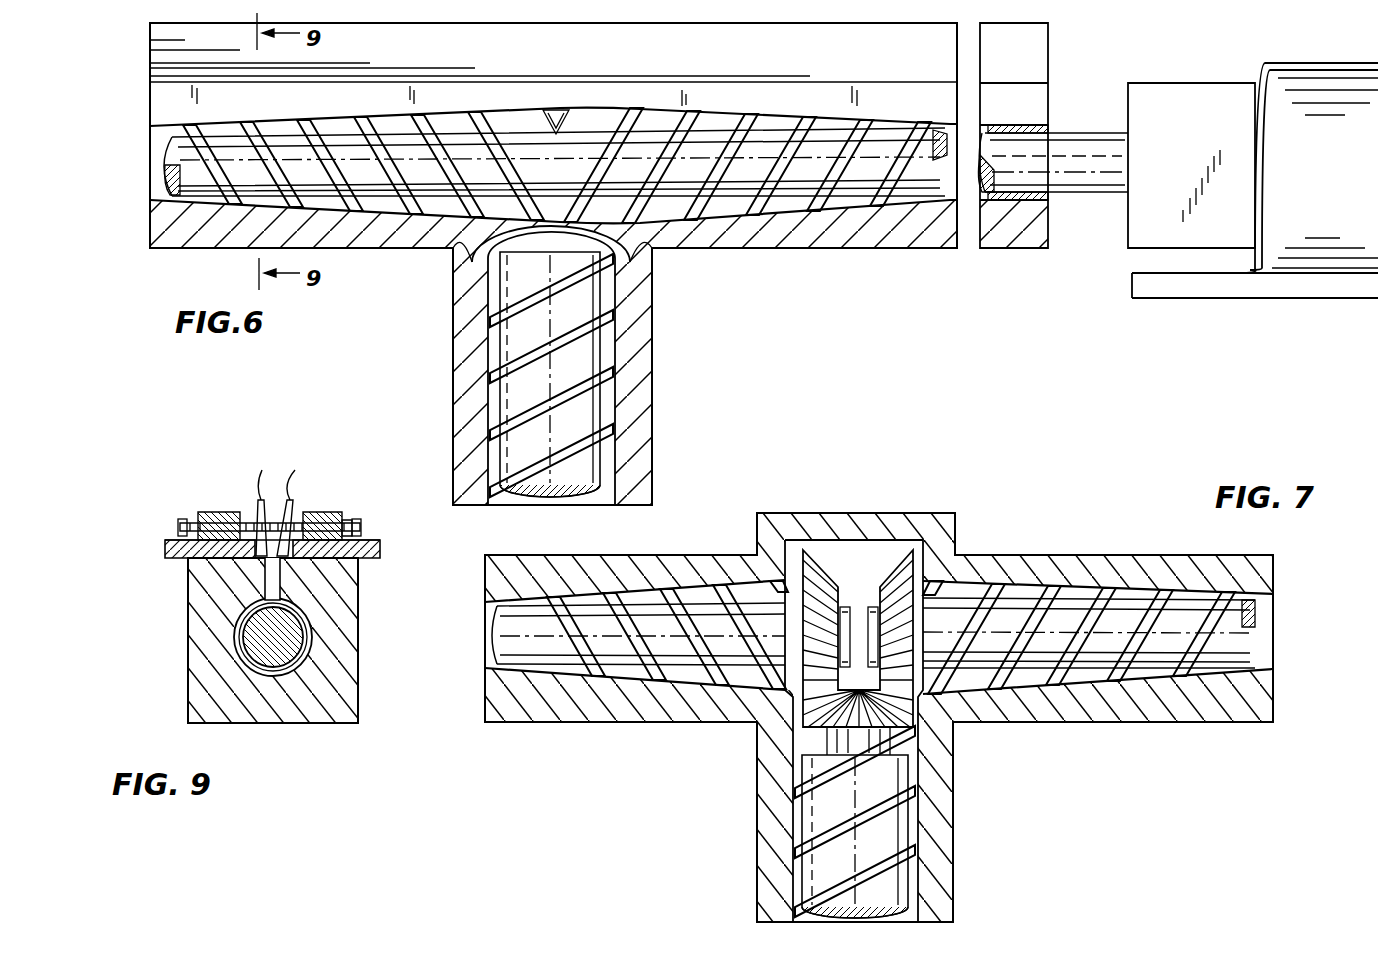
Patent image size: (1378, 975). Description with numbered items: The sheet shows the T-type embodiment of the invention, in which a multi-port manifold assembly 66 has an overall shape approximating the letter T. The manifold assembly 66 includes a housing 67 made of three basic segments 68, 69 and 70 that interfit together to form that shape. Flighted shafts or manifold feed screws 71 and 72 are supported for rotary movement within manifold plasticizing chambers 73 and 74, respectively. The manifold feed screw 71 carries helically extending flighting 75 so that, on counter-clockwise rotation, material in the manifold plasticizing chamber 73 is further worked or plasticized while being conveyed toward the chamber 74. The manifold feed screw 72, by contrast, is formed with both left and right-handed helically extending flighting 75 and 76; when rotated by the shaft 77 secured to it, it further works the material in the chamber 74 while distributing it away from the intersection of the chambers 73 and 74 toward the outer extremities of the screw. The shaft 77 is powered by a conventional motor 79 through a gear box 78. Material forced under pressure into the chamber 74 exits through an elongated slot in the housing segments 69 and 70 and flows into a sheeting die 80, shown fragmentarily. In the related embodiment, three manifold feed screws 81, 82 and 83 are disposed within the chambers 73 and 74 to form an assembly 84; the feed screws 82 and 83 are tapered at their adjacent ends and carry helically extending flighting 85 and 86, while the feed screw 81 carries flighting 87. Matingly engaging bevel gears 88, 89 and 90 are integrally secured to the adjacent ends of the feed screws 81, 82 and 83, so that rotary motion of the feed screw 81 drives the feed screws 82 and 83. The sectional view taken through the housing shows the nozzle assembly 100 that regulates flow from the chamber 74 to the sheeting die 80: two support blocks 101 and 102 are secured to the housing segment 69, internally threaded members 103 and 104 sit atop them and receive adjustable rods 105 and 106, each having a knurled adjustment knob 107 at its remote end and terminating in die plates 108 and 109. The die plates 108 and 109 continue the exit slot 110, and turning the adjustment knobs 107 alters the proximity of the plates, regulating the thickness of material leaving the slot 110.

In FIG. 6, the multi-port manifold assembly 66 is at (440, 345).
In FIG. 6, the housing 67 is at (660, 437).
In FIG. 7, the housing 67 is at (957, 902).
In FIG. 6, the housing segment 68 is at (640, 352).
In FIG. 7, the housing segment 68 is at (945, 868).
In FIG. 6, the housing segment 69 is at (815, 240).
In FIG. 7, the housing segment 69 is at (1210, 700).
In FIG. 6, the housing segment 70 is at (362, 235).
In FIG. 7, the housing segment 70 is at (658, 720).
In FIG. 9, the housing segment 70 is at (283, 715).
In FIG. 6, the manifold feed screw 71 is at (525, 452).
In FIG. 6, the manifold feed screw 72 is at (742, 185).
In FIG. 9, the manifold feed screw 72 is at (290, 650).
In FIG. 6, the manifold plasticizing chamber 73 is at (490, 405).
In FIG. 7, the manifold plasticizing chamber 73 is at (800, 760).
In FIG. 6, the manifold plasticizing chamber 74 is at (840, 125).
In FIG. 7, the manifold plasticizing chamber 74 is at (1140, 600).
In FIG. 9, the manifold plasticizing chamber 74 is at (248, 612).
In FIG. 6, the helically extending flighting 75 is at (328, 122).
In FIG. 9, the helically extending flighting 75 is at (245, 635).
In FIG. 6, the helically extending flighting 76 is at (805, 118).
In FIG. 6, the shaft 77 is at (1088, 182).
In FIG. 6, the gear box 78 is at (1200, 97).
In FIG. 6, the motor 79 is at (1348, 80).
In FIG. 6, the sheeting die 80 is at (1030, 38).
In FIG. 7, the manifold feed screw 81 is at (893, 817).
In FIG. 7, the manifold feed screw 82 is at (1078, 615).
In FIG. 7, the manifold feed screw 83 is at (690, 620).
In FIG. 7, the assembly 84 is at (725, 768).
In FIG. 7, the helically extending flighting 85 is at (1065, 680).
In FIG. 7, the helically extending flighting 86 is at (600, 670).
In FIG. 7, the flighting 87 is at (820, 832).
In FIG. 7, the bevel gear 88 is at (880, 717).
In FIG. 7, the bevel gear 89 is at (913, 567).
In FIG. 7, the bevel gear 90 is at (817, 567).
In FIG. 9, the nozzle assembly 100 is at (150, 527).
In FIG. 9, the support block 101 is at (167, 556).
In FIG. 9, the support block 102 is at (370, 556).
In FIG. 9, the member 103 is at (200, 520).
In FIG. 9, the member 104 is at (328, 512).
In FIG. 9, the adjustable rod 105 is at (235, 512).
In FIG. 9, the adjustable rod 106 is at (350, 518).
In FIG. 9, the knurled adjustment knob 107 is at (180, 530).
In FIG. 9, the die plate 108 is at (260, 497).
In FIG. 9, the die plate 109 is at (289, 497).
In FIG. 9, the exit slot 110 is at (280, 590).